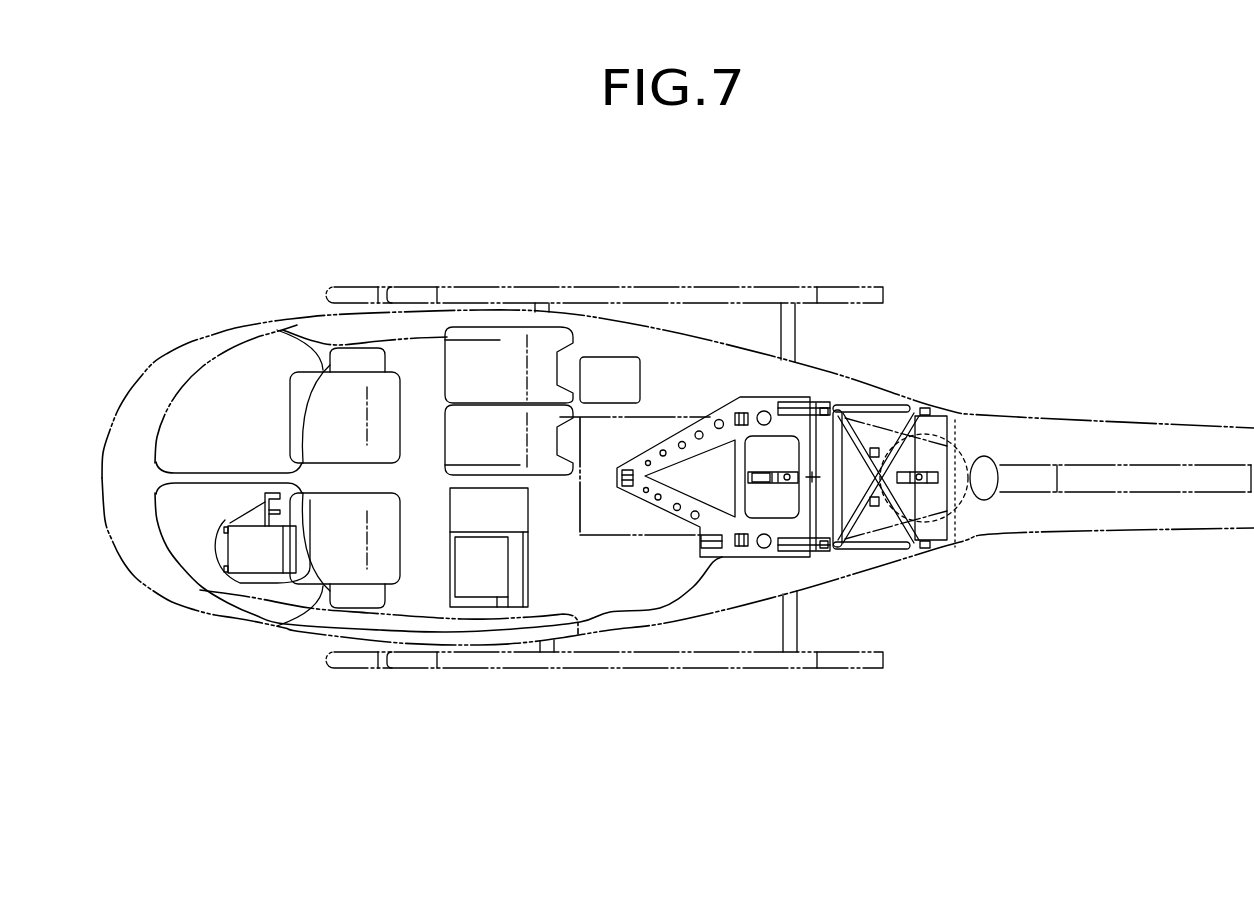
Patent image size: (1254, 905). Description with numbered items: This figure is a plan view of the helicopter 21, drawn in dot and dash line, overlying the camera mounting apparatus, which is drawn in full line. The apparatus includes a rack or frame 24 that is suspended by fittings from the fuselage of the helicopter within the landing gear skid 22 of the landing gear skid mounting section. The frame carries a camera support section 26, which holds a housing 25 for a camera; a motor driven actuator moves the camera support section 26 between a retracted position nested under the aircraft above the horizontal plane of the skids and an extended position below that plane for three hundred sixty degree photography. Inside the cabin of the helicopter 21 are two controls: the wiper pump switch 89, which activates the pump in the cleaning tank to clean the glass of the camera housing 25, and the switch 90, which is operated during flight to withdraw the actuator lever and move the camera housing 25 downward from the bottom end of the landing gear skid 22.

The helicopter 21 is at (604, 420).
The landing gear skid 22 is at (603, 286).
The rack or frame 24 is at (718, 409).
The camera housing 25 is at (960, 512).
The camera support section 26 is at (866, 404).
The wiper pump switch 89 is at (272, 513).
The switch 90 is at (270, 491).